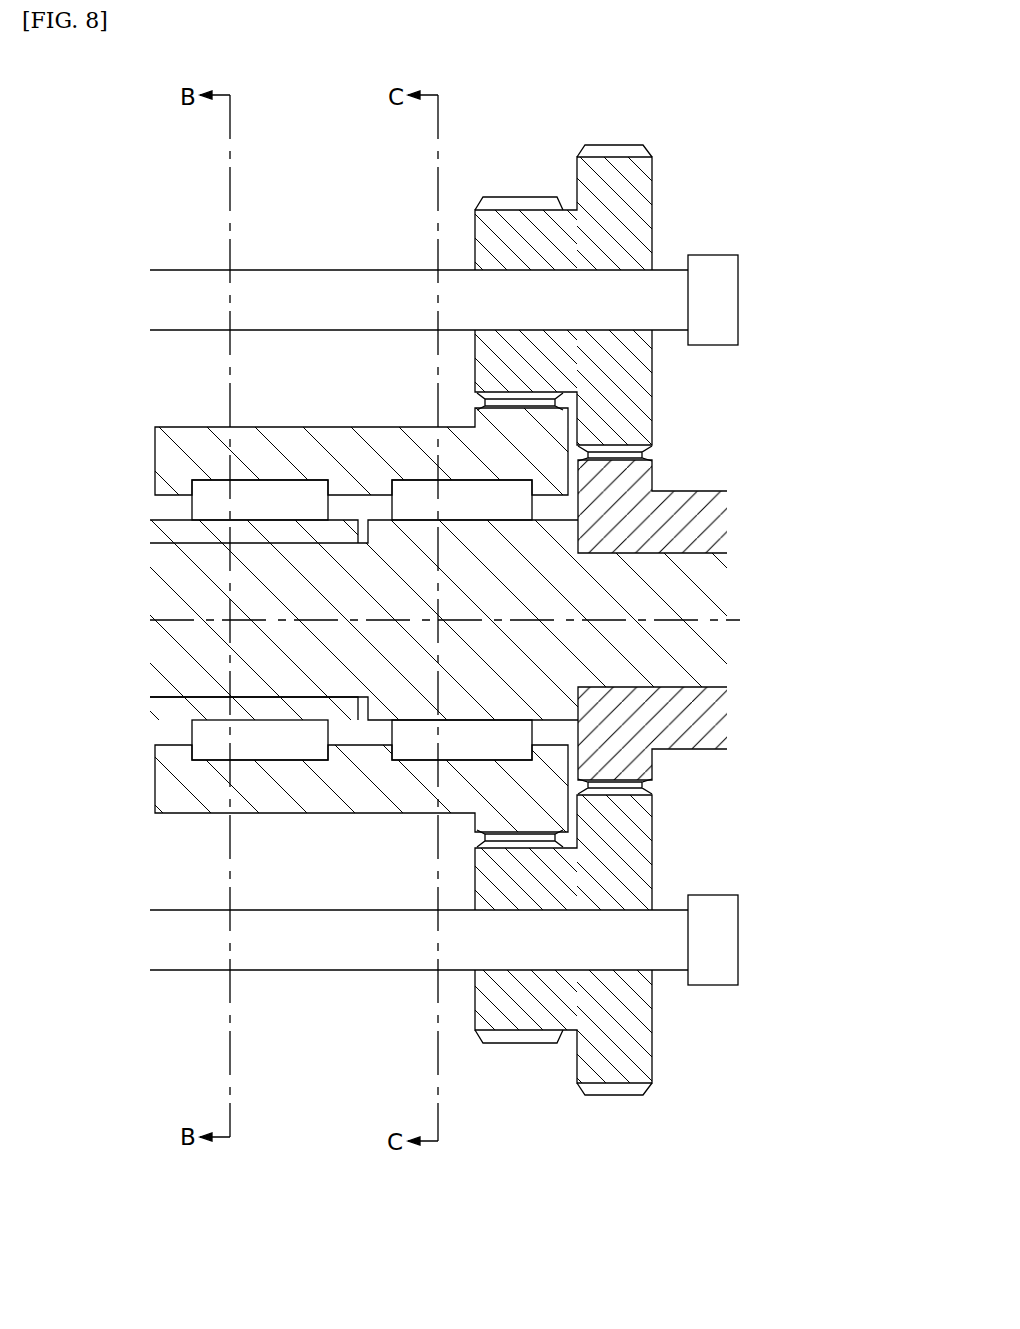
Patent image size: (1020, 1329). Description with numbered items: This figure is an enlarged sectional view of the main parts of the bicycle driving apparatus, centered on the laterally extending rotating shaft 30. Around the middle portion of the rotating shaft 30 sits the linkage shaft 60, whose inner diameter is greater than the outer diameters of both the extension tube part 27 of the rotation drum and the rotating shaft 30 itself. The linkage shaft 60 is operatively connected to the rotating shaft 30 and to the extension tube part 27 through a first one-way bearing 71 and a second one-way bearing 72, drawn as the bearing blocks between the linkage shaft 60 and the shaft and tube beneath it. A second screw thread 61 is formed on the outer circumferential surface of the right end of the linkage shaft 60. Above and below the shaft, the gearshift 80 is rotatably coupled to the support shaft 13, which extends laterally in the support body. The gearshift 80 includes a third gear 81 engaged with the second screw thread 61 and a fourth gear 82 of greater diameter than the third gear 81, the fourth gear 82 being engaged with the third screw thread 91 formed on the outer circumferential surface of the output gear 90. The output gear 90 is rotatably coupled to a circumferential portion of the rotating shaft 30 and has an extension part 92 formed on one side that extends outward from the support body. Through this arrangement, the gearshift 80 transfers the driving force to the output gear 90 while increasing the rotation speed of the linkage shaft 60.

The support shaft 13 is at (175, 270).
The extension tube part 27 is at (170, 520).
The rotating shaft 30 is at (700, 722).
The linkage shaft 60 is at (175, 427).
The second screw thread 61 is at (479, 394).
The first one-way bearing 71 is at (220, 763).
The second one-way bearing 72 is at (395, 770).
The gearshift 80 is at (652, 210).
The third gear 81 is at (520, 197).
The fourth gear 82 is at (613, 145).
The output gear 90 is at (674, 751).
The third screw thread 91 is at (613, 445).
The extension part 92 is at (697, 489).